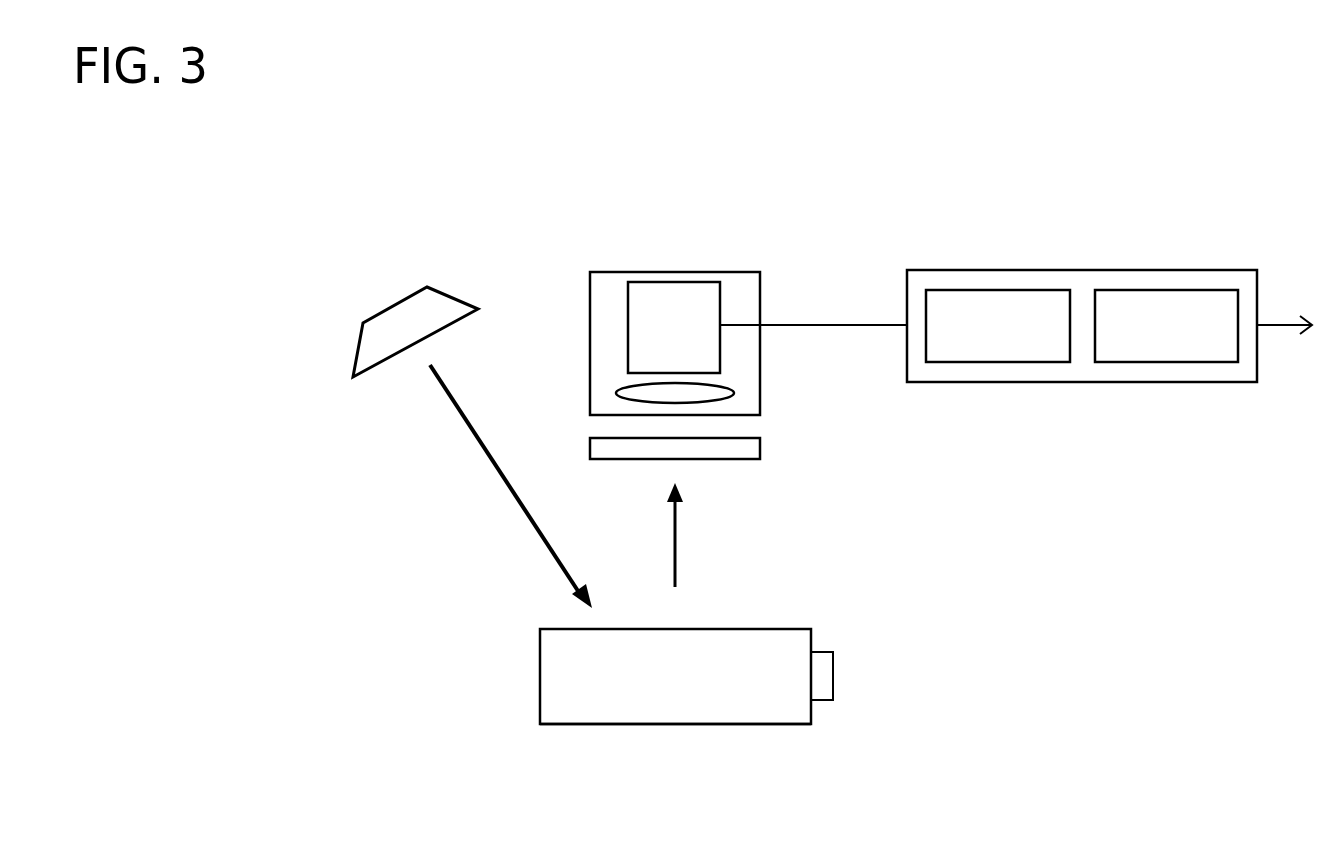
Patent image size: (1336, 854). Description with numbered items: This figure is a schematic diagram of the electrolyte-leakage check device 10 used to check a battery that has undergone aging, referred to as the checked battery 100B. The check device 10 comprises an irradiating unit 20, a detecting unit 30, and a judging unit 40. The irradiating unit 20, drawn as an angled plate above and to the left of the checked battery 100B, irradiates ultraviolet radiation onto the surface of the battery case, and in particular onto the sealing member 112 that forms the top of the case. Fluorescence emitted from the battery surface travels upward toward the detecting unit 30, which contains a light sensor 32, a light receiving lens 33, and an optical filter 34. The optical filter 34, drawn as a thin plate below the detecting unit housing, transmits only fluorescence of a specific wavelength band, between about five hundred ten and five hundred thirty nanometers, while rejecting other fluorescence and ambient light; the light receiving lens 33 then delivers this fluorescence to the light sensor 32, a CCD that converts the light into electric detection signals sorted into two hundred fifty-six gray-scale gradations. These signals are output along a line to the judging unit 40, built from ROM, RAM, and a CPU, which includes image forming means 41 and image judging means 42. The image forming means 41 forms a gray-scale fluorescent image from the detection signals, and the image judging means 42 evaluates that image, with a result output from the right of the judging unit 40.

The electrolyte-leakage check device 10 is at (766, 188).
The irradiating unit 20 is at (390, 322).
The detecting unit 30 is at (641, 264).
The light sensor 32 is at (703, 292).
The light receiving lens 33 is at (715, 390).
The optical filter 34 is at (748, 448).
The judging unit 40 is at (1153, 257).
The image forming means 41 is at (1050, 350).
The image judging means 42 is at (1218, 350).
The checked battery 100B is at (530, 682).
The sealing member 112 is at (705, 693).